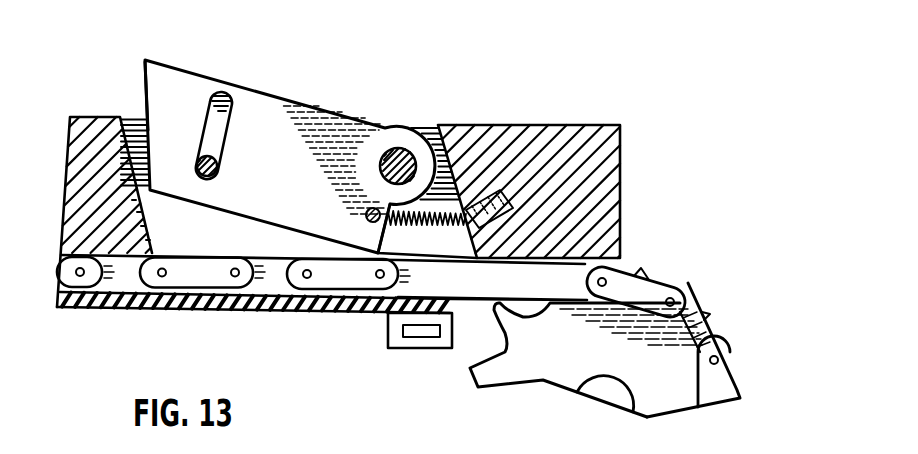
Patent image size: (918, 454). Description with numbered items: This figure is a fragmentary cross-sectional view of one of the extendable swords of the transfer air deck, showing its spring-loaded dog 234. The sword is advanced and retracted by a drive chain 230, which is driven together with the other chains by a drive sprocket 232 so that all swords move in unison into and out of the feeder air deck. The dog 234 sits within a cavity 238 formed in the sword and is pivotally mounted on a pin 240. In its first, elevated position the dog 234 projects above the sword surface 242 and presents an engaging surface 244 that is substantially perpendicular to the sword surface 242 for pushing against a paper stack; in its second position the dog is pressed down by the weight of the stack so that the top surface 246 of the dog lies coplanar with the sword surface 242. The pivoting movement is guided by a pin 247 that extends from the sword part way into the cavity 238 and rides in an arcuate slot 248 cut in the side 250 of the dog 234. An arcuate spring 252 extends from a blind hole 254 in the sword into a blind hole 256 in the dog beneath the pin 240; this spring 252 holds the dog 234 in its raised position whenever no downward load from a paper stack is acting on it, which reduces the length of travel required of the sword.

The drive chain 230 is at (678, 283).
The drive sprocket 232 is at (502, 350).
The spring-loaded dog 234 is at (252, 87).
The cavity 238 is at (150, 203).
The pin 240 is at (392, 148).
The sword surface 242 is at (103, 115).
The engaging surface 244 is at (145, 80).
The top surface of the dog 246 is at (338, 110).
The guide pin 247 is at (220, 167).
The arcuate slot 248 is at (207, 107).
The side of the dog 250 is at (280, 151).
The arcuate spring 252 is at (427, 231).
The blind hole in the sword 254 is at (474, 230).
The blind hole in the dog 256 is at (363, 210).